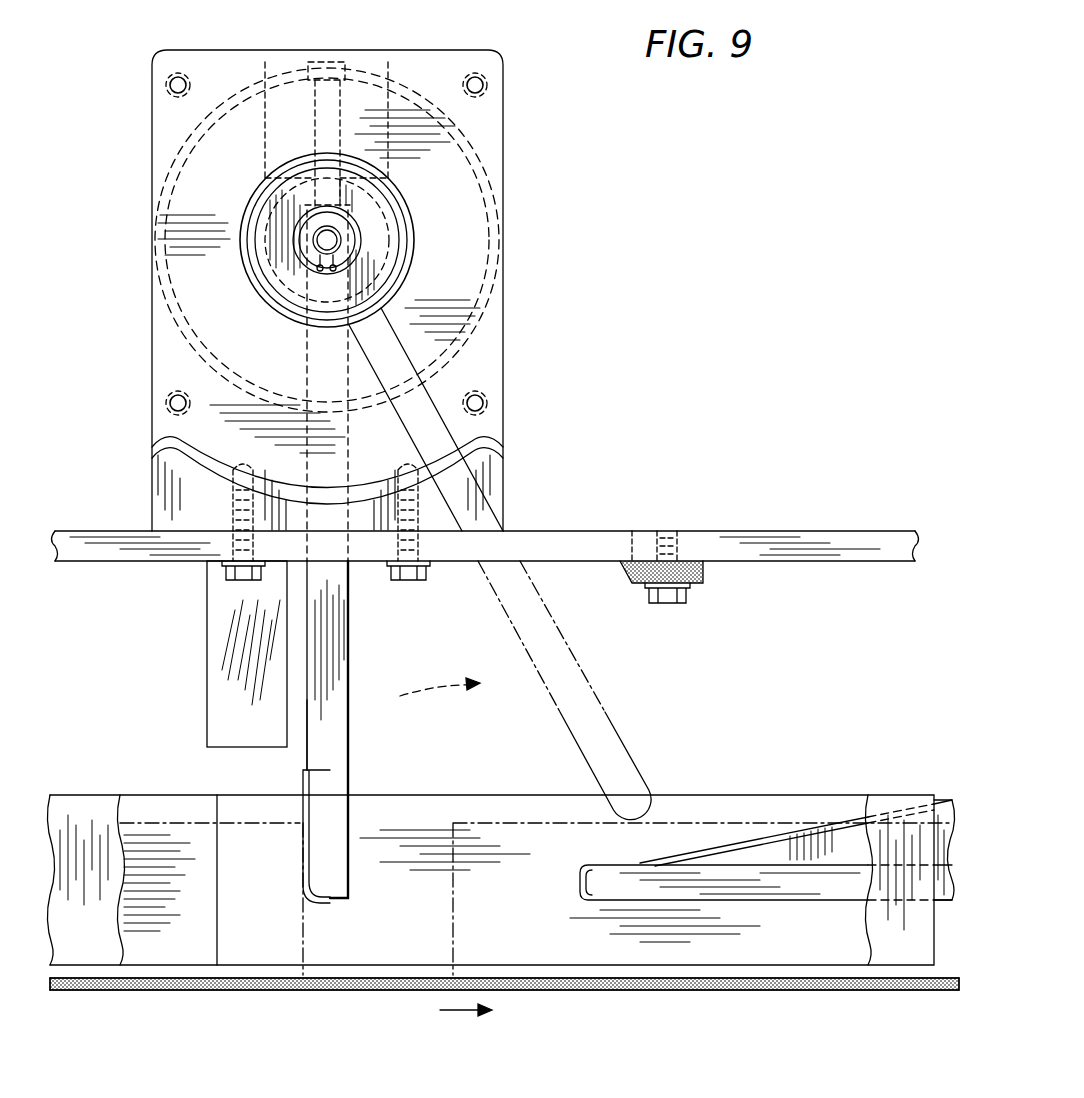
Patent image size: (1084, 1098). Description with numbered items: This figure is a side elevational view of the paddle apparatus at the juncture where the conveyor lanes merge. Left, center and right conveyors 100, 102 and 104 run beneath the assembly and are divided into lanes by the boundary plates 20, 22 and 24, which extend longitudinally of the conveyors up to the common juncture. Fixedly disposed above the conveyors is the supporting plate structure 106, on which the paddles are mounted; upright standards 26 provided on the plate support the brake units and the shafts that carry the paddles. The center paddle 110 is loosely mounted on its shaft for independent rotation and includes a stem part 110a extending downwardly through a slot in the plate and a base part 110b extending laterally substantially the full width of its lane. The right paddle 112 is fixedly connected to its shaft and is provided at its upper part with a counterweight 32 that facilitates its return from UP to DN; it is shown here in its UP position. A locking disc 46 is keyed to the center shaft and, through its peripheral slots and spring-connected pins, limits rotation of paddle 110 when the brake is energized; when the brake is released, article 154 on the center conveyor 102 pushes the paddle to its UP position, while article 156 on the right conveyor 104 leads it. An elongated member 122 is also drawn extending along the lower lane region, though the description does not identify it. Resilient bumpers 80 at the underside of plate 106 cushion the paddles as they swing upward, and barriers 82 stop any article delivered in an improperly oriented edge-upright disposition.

The boundary plate 20 is at (200, 915).
The boundary plate 22 is at (500, 805).
The boundary plate 24 is at (76, 800).
The upright standard 26 is at (500, 107).
The counterweight 32 is at (375, 62).
The locking disc 46 is at (480, 155).
The resilient bumper 80 is at (703, 575).
The barrier 82 is at (215, 640).
The left conveyor 100 is at (200, 992).
The center conveyor 102 is at (504, 984).
The right conveyor 104 is at (504, 984).
The supporting plate structure 106 is at (582, 531).
The paddle 110 is at (352, 632).
The stem part 110a is at (345, 736).
The base part 110b is at (320, 795).
The paddle 112 is at (578, 650).
The guide rod 122 is at (800, 892).
The article 154 is at (160, 800).
The article 156 is at (722, 810).